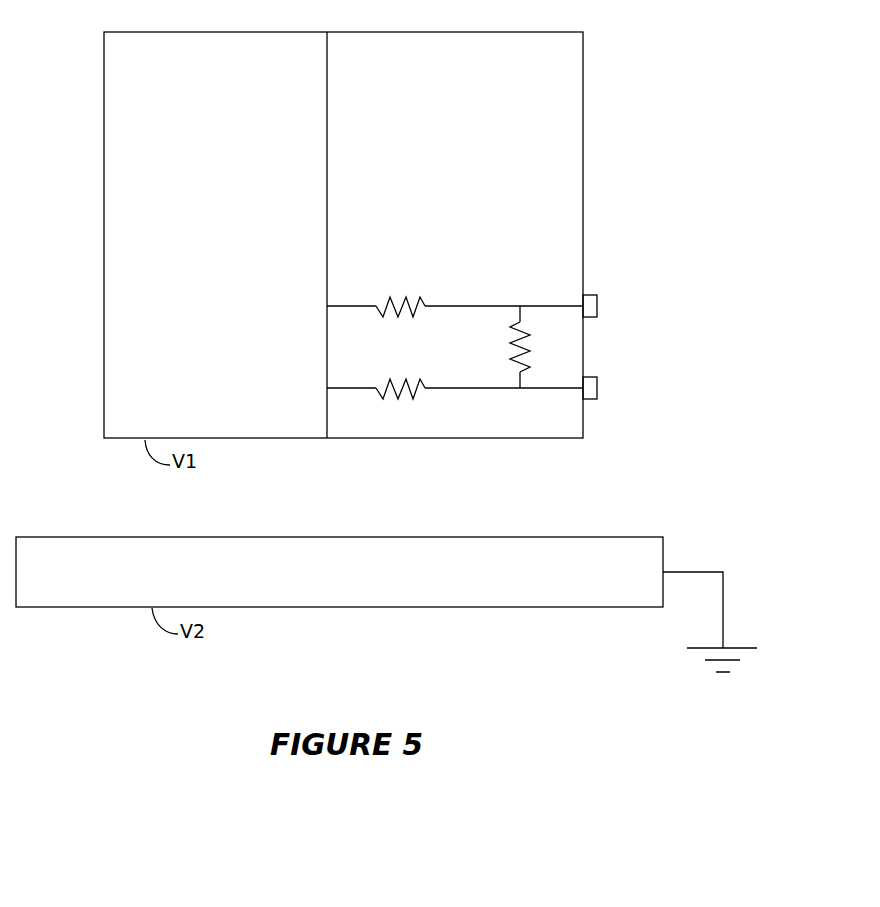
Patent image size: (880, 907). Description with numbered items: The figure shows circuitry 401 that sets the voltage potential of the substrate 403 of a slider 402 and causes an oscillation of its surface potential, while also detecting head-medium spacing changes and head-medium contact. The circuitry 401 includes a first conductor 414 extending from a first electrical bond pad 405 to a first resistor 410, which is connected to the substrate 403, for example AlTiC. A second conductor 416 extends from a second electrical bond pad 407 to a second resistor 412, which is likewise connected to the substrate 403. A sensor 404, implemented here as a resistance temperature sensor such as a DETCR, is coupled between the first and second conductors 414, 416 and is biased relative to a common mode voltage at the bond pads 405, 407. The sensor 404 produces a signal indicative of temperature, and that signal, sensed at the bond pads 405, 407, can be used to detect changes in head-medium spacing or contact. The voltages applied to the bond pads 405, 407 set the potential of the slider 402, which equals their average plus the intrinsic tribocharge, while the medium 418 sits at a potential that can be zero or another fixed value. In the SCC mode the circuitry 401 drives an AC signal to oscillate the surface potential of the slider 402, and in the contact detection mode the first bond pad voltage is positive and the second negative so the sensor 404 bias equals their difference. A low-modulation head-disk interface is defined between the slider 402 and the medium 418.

The circuitry 401 is at (463, 221).
The slider 402 is at (583, 92).
The substrate 403 is at (215, 235).
The sensor 404 is at (515, 326).
The first electrical bond pad 405 is at (587, 293).
The second electrical bond pad 407 is at (585, 378).
The first resistor 410 is at (405, 296).
The second resistor 412 is at (405, 380).
The first conductor 414 is at (495, 303).
The second conductor 416 is at (487, 392).
The medium 418 is at (592, 537).